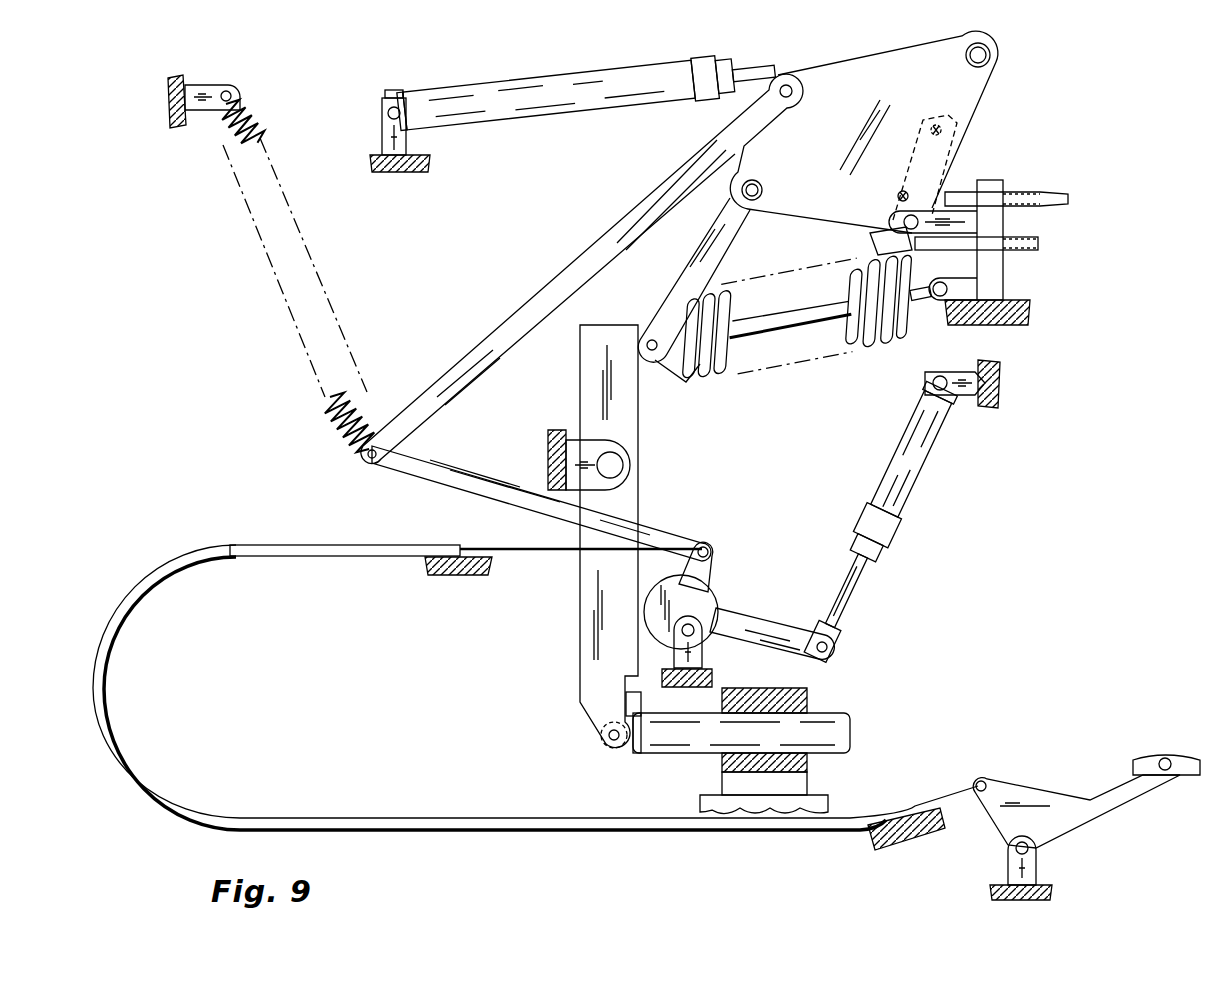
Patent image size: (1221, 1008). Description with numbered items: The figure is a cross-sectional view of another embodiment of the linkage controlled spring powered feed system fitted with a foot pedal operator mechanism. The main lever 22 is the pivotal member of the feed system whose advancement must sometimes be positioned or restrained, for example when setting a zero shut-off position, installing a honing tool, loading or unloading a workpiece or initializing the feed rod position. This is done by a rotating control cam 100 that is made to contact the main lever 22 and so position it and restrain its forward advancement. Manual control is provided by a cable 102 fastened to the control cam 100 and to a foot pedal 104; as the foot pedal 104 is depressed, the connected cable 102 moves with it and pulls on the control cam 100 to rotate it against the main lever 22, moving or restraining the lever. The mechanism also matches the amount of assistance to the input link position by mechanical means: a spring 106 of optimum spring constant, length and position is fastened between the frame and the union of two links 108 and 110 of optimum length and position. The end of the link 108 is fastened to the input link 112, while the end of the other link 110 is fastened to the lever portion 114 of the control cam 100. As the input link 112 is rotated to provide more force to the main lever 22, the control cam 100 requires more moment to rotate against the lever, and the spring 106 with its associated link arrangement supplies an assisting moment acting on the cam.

The main lever 22 is at (590, 725).
The control cam 100 is at (717, 590).
The cable 102 is at (346, 816).
The foot pedal 104 is at (1185, 780).
The spring 106 is at (332, 420).
The link 108 is at (447, 383).
The link 110 is at (490, 480).
The input link 112 is at (998, 60).
The lever portion 114 is at (712, 557).